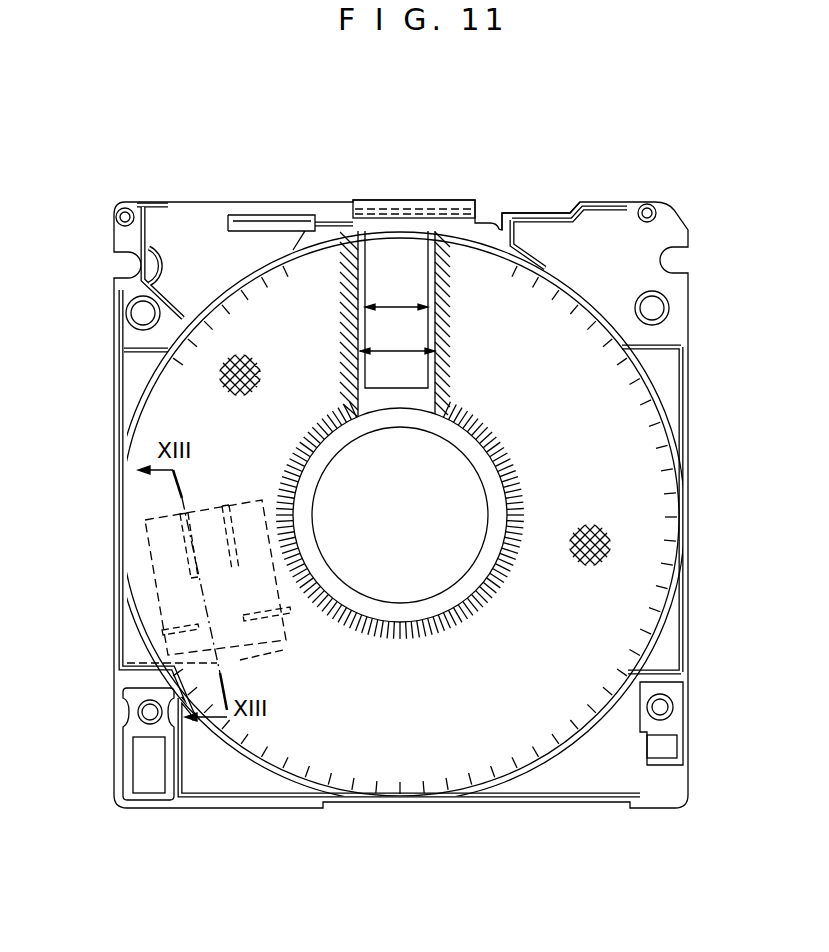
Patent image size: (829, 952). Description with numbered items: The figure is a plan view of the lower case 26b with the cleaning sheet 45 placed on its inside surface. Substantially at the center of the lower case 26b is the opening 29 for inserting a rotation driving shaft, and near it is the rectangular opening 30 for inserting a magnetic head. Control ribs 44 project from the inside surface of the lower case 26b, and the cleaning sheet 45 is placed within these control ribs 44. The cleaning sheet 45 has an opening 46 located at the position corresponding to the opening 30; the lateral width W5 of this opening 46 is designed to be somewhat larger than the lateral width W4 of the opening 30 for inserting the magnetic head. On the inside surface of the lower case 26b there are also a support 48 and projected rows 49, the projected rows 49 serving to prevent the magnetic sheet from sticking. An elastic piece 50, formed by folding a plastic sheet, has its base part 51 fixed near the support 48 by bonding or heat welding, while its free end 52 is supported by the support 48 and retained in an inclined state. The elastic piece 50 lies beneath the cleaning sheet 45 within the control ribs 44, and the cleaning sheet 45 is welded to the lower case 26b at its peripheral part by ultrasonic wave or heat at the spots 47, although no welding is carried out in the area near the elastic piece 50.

The control ribs 44 is at (228, 280).
The opening for inserting a rotation driving shaft 29 is at (416, 507).
The spots 47 is at (512, 507).
The opening for inserting a magnetic head 30 is at (427, 260).
The opening of the cleaning sheet 46 is at (372, 255).
The lateral width of the opening for inserting the magnetic head W4 is at (397, 307).
The lateral width of the opening of the cleaning sheet W5 is at (397, 351).
The lower case 26b is at (555, 235).
The cleaning sheet 45 is at (605, 550).
The elastic piece 50 is at (157, 577).
The free end 52 is at (175, 582).
The projected rows 49 is at (228, 545).
The support 48 is at (175, 630).
The base part 51 is at (127, 665).